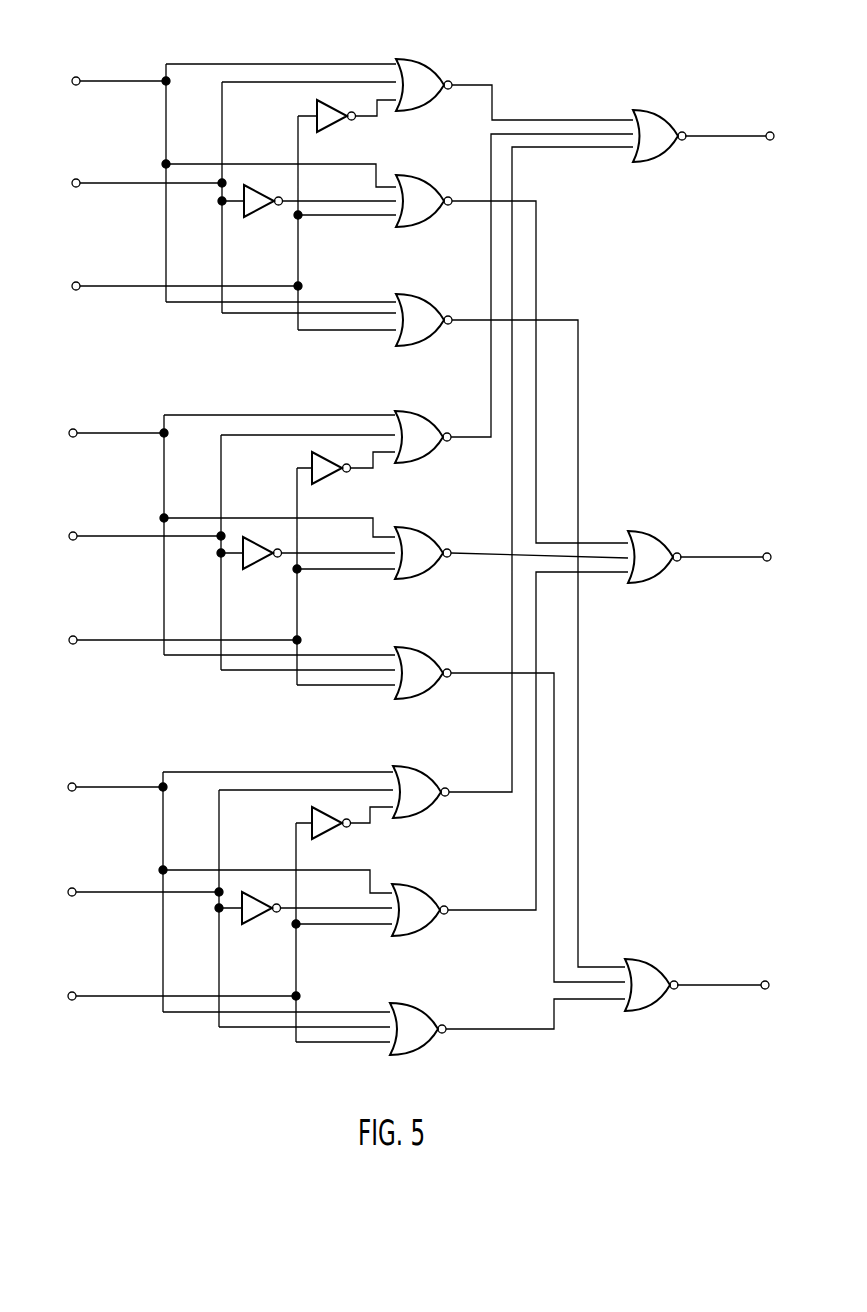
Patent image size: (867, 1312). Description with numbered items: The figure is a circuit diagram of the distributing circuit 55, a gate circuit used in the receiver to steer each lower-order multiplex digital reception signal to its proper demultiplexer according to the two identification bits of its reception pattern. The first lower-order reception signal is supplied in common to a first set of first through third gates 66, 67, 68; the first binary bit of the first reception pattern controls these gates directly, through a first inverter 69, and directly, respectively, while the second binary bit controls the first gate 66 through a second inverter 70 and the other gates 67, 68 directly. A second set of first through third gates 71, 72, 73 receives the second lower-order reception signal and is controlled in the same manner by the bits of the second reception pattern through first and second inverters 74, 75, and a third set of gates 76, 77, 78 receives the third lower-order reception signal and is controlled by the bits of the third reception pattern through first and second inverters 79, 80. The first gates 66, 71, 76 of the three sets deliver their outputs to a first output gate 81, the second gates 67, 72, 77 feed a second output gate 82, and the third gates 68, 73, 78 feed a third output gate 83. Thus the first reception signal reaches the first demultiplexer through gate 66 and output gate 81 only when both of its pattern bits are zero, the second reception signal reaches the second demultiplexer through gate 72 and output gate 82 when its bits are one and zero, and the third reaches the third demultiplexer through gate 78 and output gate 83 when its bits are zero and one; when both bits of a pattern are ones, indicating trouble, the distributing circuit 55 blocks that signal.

The distributing circuit 55 is at (647, 75).
The first-set first gate 66 is at (423, 59).
The first-set second gate 67 is at (423, 174).
The first-set third gate 68 is at (442, 307).
The first inverter 69 is at (250, 217).
The second inverter 70 is at (332, 128).
The second-set first gate 71 is at (429, 399).
The second-set second gate 72 is at (427, 519).
The second-set third gate 73 is at (429, 643).
The first inverter 74 is at (251, 568).
The second inverter 75 is at (320, 480).
The third-set first gate 76 is at (429, 756).
The third-set second gate 77 is at (427, 873).
The third-set third gate 78 is at (427, 991).
The first inverter 79 is at (252, 924).
The second inverter 80 is at (321, 835).
The first output gate 81 is at (647, 158).
The second output gate 82 is at (648, 582).
The third output gate 83 is at (642, 1010).